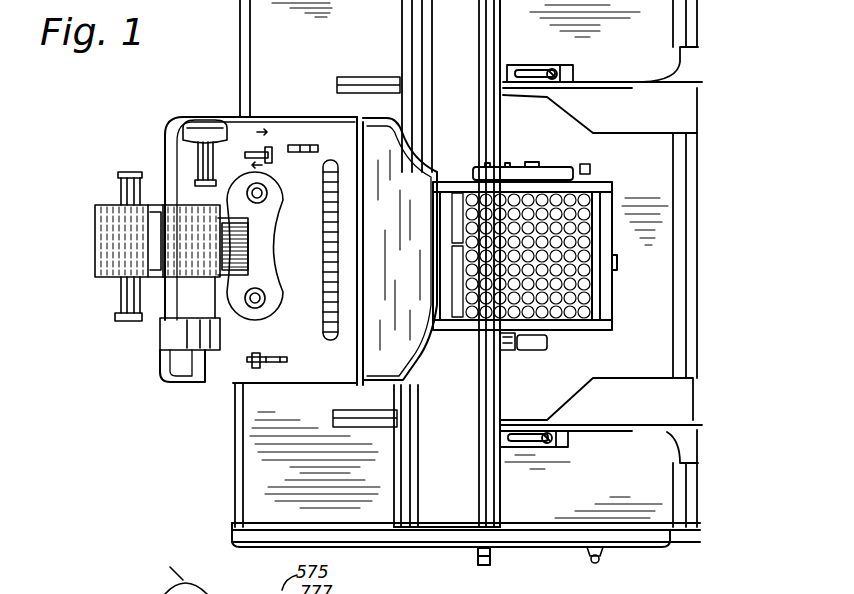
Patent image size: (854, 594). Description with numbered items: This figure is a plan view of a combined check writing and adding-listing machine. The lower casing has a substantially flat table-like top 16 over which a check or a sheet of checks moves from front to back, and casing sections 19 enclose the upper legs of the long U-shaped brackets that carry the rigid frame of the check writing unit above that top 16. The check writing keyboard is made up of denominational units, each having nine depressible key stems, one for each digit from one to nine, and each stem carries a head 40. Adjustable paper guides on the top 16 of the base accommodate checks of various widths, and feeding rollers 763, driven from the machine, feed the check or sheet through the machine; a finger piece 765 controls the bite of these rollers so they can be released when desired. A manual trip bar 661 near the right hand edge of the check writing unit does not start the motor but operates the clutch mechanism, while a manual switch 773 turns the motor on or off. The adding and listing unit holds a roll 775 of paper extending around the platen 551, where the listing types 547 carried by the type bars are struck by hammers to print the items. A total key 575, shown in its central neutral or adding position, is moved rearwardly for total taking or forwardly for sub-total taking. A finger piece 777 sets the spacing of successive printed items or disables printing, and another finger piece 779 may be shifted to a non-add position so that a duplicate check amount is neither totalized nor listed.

The table-like top 16 is at (466, 282).
The casing sections 19 is at (447, 263).
The key head 40 is at (588, 300).
The types 547 is at (243, 252).
The platen 551 is at (200, 297).
The total key 575 is at (268, 150).
The manual trip bar 661 is at (528, 172).
The feeding rollers 763 is at (538, 348).
The finger piece 765 is at (590, 168).
The manual switch 773 is at (598, 563).
The roll of paper 775 is at (96, 237).
The finger piece 777 is at (268, 364).
The finger piece 779 is at (308, 145).